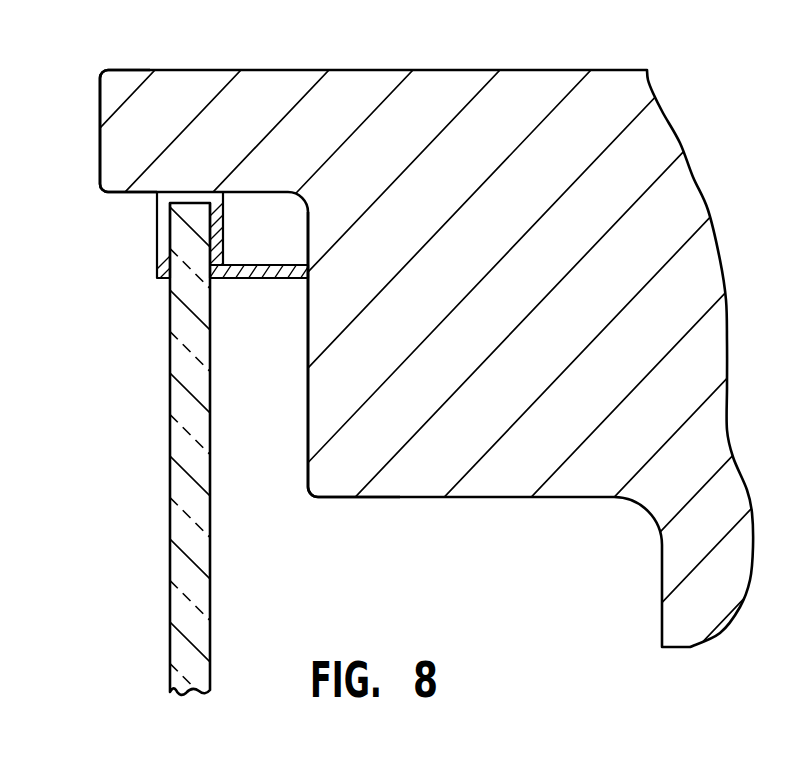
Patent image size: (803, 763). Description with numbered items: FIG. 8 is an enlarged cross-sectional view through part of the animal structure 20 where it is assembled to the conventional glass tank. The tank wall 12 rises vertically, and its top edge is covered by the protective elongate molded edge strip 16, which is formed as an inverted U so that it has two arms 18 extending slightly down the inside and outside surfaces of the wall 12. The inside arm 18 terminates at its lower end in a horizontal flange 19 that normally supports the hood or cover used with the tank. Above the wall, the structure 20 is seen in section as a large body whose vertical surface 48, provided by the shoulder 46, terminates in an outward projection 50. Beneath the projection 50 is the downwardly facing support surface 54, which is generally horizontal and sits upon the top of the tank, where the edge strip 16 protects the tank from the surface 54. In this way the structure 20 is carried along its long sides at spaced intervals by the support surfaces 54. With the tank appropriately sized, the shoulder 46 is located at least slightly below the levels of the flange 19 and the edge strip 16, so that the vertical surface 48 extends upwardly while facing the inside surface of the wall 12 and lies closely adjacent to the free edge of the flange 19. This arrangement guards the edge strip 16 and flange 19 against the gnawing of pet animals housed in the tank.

The glass wall 12 is at (168, 571).
The edge strip 16 is at (211, 267).
The arm 18 is at (159, 268).
The horizontal flange 19 is at (275, 280).
The structure 20 is at (476, 64).
The shoulder 46 is at (308, 502).
The vertical surface 48 is at (308, 432).
The outward projection 50 is at (100, 97).
The support surface 54 is at (138, 193).